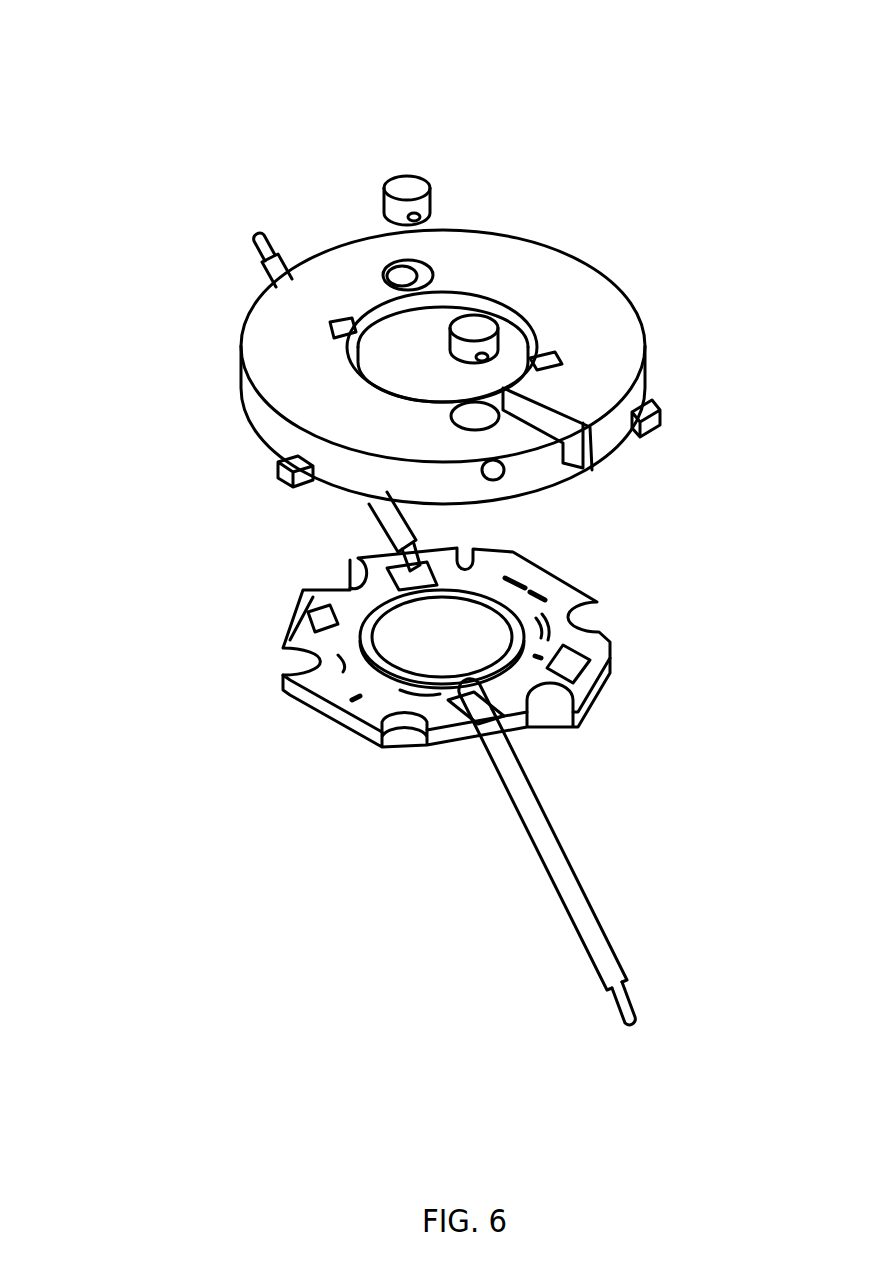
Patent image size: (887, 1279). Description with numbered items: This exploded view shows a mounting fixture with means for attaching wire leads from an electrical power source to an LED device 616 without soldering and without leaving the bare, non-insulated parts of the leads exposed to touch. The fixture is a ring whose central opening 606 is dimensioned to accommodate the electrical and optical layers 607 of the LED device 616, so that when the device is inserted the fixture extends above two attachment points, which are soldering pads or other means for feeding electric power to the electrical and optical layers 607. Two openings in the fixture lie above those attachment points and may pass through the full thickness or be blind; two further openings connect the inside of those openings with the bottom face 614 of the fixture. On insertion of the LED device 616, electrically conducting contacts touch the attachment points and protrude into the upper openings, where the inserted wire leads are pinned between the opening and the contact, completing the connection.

The opening 606 is at (393, 382).
The electrical and optical layers 607 is at (478, 633).
The bottom face of mounting fixture 614 is at (280, 467).
The LED device 616 is at (588, 578).